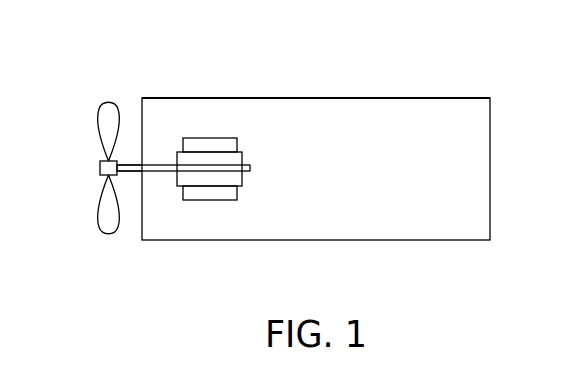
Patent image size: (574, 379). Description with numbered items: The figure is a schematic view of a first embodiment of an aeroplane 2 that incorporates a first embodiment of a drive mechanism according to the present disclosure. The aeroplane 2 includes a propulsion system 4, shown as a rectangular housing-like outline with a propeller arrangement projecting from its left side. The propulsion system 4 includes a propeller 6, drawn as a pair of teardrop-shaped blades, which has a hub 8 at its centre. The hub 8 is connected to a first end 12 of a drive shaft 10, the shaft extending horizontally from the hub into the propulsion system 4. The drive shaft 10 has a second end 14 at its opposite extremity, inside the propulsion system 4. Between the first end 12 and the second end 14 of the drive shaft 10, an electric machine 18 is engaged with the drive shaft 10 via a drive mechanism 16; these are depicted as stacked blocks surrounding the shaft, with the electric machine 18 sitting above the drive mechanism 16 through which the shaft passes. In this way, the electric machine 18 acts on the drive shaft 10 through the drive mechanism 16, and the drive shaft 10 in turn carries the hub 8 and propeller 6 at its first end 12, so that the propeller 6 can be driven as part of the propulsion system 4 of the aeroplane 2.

The aeroplane 2 is at (380, 98).
The propulsion system 4 is at (211, 207).
The propeller 6 is at (98, 118).
The hub 8 is at (100, 170).
The drive shaft 10 is at (131, 162).
The first end 12 is at (127, 177).
The second end 14 is at (250, 170).
The drive mechanism 16 is at (222, 157).
The electric machine 18 is at (205, 143).